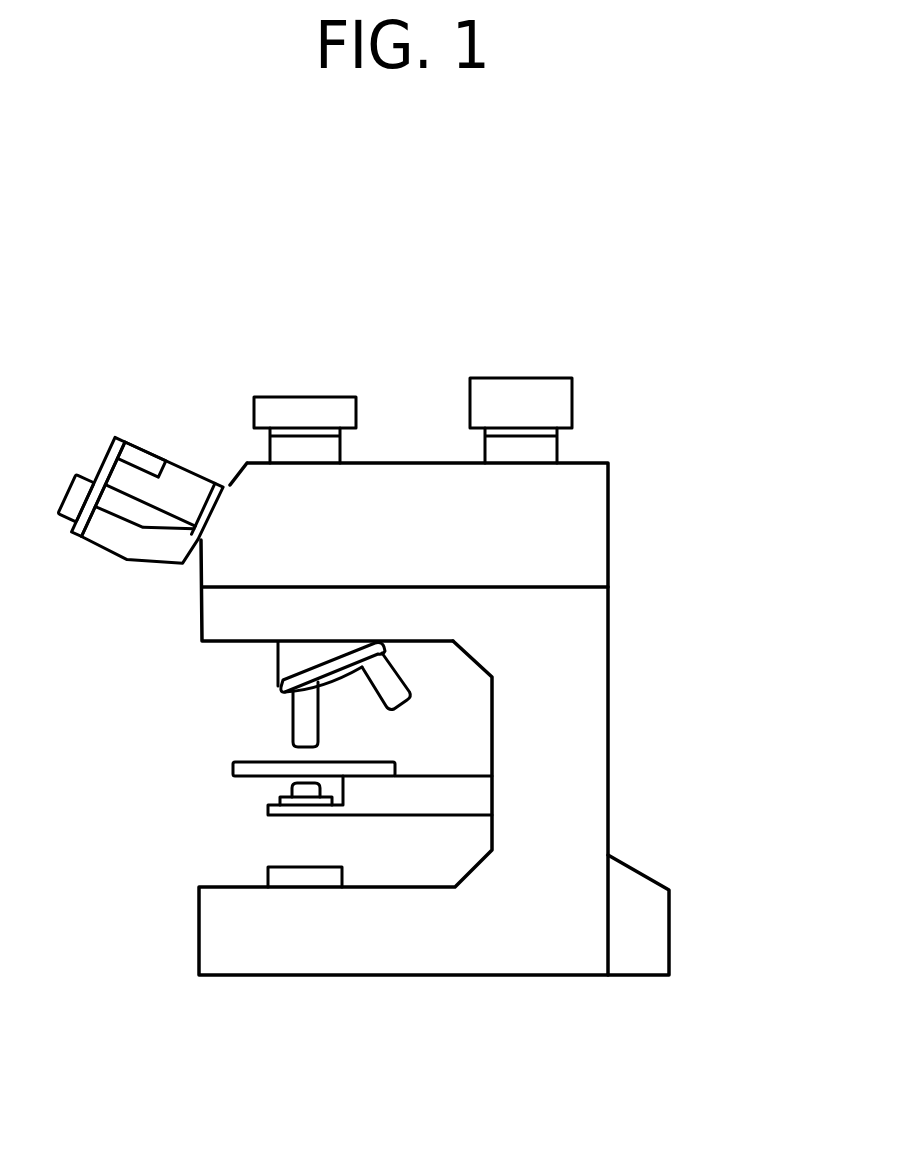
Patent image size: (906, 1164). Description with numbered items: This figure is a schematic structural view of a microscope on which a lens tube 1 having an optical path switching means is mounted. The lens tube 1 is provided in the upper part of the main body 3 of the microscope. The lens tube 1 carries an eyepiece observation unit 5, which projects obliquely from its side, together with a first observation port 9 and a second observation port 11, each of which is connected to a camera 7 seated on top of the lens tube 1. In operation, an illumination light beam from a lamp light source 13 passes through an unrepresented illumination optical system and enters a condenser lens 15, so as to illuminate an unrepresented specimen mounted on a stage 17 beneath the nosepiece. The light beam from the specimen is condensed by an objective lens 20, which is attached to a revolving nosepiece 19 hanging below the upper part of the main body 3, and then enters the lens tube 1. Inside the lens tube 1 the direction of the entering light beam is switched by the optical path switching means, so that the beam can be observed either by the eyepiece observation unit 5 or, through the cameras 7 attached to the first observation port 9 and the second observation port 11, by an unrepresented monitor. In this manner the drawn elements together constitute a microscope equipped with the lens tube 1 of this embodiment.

The lens tube 1 is at (593, 530).
The main body 3 is at (592, 748).
The eyepiece observation unit 5 is at (107, 470).
The camera 7 is at (477, 378).
The first observation port 9 is at (267, 452).
The second observation port 11 is at (540, 446).
The lamp light source 13 is at (647, 922).
The condenser lens 15 is at (290, 795).
The stage 17 is at (243, 767).
The revolving nosepiece 19 is at (288, 676).
The objective lens 20 is at (302, 718).